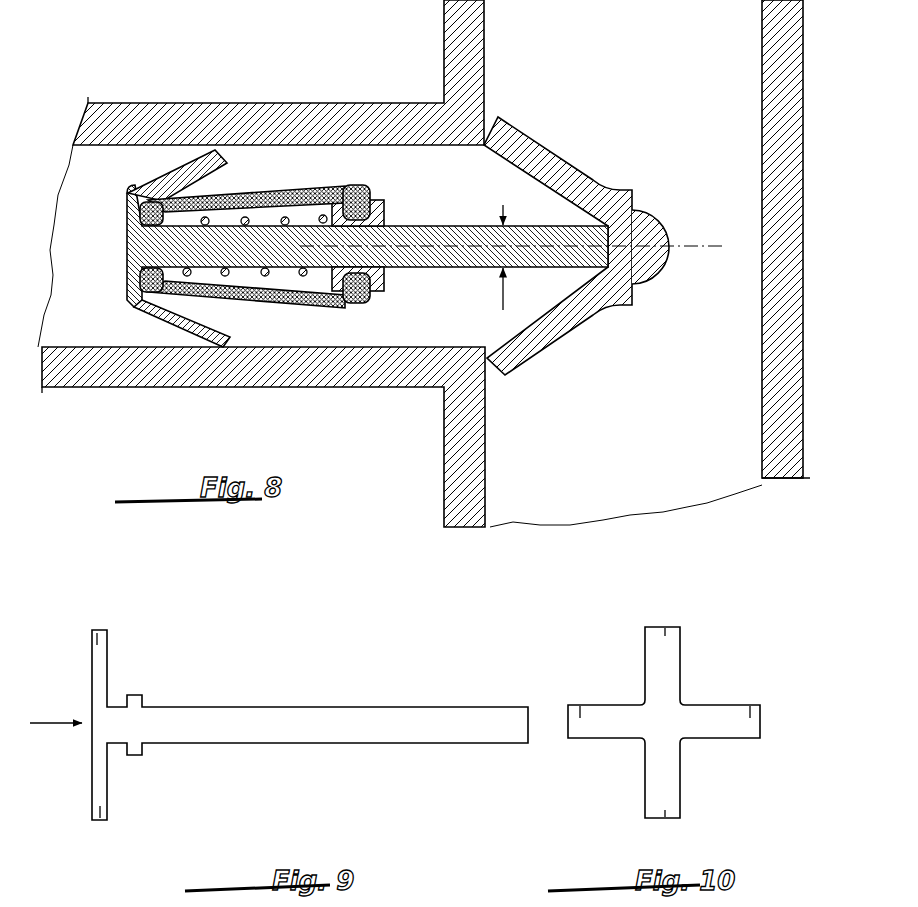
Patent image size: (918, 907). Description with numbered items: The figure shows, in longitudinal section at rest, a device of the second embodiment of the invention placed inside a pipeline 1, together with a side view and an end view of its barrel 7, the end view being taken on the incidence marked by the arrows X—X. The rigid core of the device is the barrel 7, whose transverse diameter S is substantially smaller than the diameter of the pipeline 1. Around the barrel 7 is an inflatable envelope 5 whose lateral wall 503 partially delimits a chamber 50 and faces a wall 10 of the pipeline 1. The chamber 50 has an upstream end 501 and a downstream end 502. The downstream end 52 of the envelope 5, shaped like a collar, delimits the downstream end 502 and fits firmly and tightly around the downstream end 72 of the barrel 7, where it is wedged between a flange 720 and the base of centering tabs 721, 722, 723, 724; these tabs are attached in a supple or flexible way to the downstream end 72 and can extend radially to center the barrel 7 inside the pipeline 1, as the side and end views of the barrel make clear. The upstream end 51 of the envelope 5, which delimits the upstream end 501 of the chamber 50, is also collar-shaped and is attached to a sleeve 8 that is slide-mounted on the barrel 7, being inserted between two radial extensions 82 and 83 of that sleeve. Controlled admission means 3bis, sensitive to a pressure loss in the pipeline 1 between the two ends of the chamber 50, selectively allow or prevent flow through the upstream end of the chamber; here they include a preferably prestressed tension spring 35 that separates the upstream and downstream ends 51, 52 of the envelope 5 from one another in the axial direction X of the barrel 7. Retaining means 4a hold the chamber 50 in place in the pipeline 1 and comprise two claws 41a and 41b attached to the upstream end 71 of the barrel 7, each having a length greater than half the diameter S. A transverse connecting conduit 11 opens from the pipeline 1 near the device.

In FIG. 8, the pipeline 1 is at (128, 389).
In FIG. 8, the wall of the pipeline 10 is at (88, 347).
In FIG. 8, the transverse connecting conduit 11 is at (643, 484).
In FIG. 8, the retaining means 4a is at (576, 206).
In FIG. 8, the claw 41a is at (560, 167).
In FIG. 8, the claw 41b is at (552, 330).
In FIG. 8, the barrel 7 is at (338, 242).
In FIG. 9, the barrel 7 is at (310, 710).
In FIG. 8, the upstream end of the barrel 71 is at (540, 256).
In FIG. 9, the upstream end of the barrel 71 is at (460, 717).
In FIG. 8, the downstream end of the barrel 72 is at (142, 245).
In FIG. 9, the downstream end of the barrel 72 is at (129, 684).
In FIG. 10, the downstream end of the barrel 72 is at (673, 704).
In FIG. 8, the flange 720 is at (174, 278).
In FIG. 9, the flange 720 is at (138, 697).
In FIG. 8, the centering tab 721 is at (218, 160).
In FIG. 9, the centering tab 721 is at (99, 638).
In FIG. 10, the centering tab 721 is at (665, 632).
In FIG. 10, the centering tab 722 is at (750, 717).
In FIG. 8, the centering tab 723 is at (217, 347).
In FIG. 9, the centering tab 723 is at (102, 822).
In FIG. 10, the centering tab 723 is at (665, 813).
In FIG. 10, the centering tab 724 is at (580, 717).
In FIG. 8, the inflatable envelope 5 is at (243, 235).
In FIG. 8, the upstream end of the chamber 501 is at (326, 210).
In FIG. 8, the downstream end of the chamber 502 is at (182, 210).
In FIG. 8, the lateral wall 503 is at (287, 195).
In FIG. 8, the chamber 50 is at (284, 276).
In FIG. 8, the upstream end of the envelope 51 is at (362, 188).
In FIG. 8, the downstream end of the envelope 52 is at (140, 202).
In FIG. 8, the sleeve 8 is at (394, 271).
In FIG. 8, the radial extension 82 is at (286, 278).
In FIG. 8, the radial extension 83 is at (382, 292).
In FIG. 8, the tension spring 35 is at (236, 284).
In FIG. 8, the controlled admission means 3bis is at (313, 279).
In FIG. 8, the transverse diameter S is at (494, 259).
In FIG. 8, the axial direction X is at (700, 246).
In FIG. 9, the axial direction X is at (56, 711).